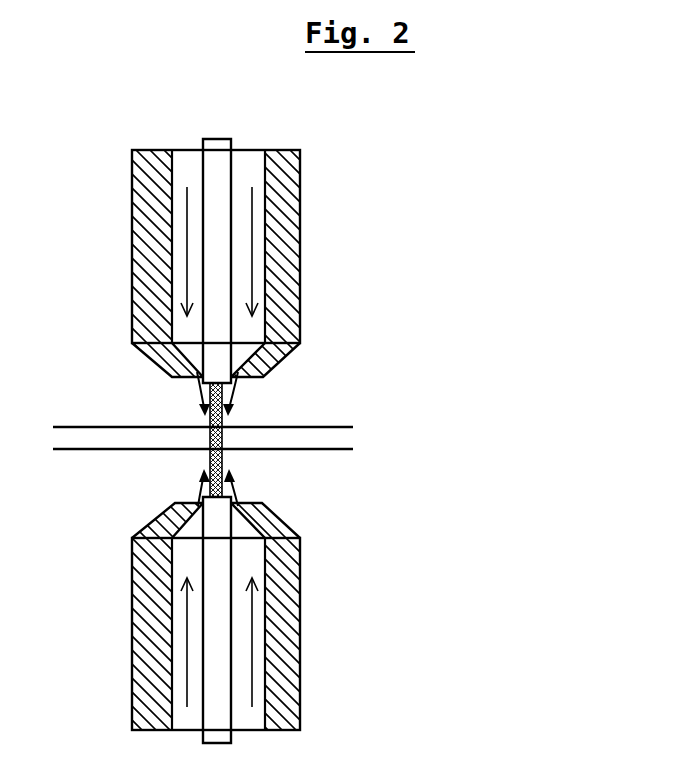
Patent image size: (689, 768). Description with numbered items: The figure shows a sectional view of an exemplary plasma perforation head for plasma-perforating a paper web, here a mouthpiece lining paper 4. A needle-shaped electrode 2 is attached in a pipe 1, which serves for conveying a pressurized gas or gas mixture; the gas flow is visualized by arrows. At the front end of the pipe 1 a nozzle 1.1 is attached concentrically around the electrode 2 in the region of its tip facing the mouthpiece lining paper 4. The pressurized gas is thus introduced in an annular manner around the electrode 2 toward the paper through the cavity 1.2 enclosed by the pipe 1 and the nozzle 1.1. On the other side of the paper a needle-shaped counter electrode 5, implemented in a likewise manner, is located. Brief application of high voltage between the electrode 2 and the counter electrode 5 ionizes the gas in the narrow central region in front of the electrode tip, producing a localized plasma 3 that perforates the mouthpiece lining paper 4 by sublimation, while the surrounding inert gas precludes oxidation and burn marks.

The pipe 1 is at (280, 305).
The nozzle 1.1 is at (285, 357).
The cavity 1.2 is at (250, 177).
The needle-shaped electrode 2 is at (218, 258).
The localized plasma 3 is at (230, 417).
The mouthpiece lining paper 4 is at (282, 440).
The counter electrode 5 is at (210, 568).